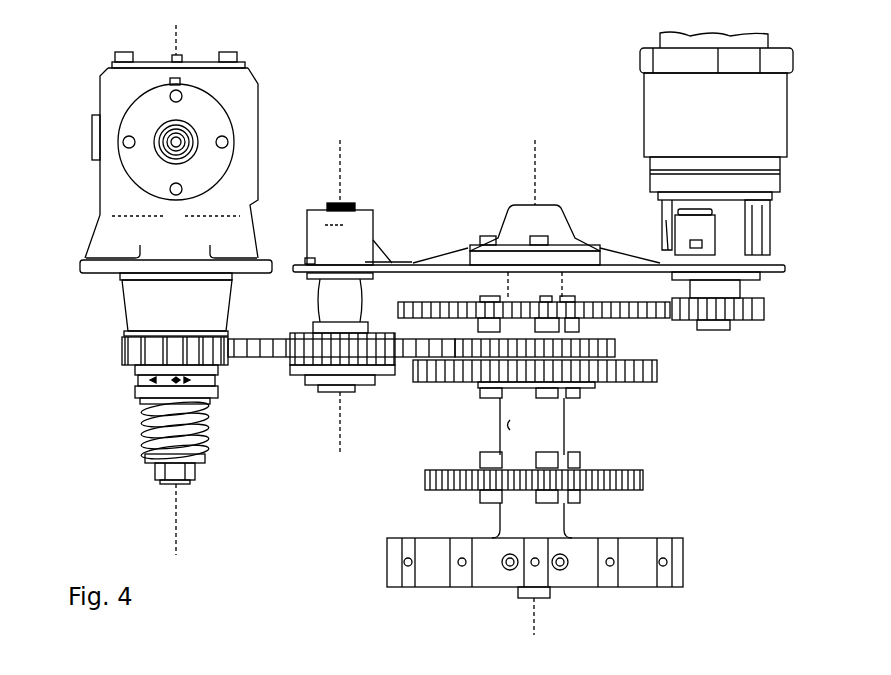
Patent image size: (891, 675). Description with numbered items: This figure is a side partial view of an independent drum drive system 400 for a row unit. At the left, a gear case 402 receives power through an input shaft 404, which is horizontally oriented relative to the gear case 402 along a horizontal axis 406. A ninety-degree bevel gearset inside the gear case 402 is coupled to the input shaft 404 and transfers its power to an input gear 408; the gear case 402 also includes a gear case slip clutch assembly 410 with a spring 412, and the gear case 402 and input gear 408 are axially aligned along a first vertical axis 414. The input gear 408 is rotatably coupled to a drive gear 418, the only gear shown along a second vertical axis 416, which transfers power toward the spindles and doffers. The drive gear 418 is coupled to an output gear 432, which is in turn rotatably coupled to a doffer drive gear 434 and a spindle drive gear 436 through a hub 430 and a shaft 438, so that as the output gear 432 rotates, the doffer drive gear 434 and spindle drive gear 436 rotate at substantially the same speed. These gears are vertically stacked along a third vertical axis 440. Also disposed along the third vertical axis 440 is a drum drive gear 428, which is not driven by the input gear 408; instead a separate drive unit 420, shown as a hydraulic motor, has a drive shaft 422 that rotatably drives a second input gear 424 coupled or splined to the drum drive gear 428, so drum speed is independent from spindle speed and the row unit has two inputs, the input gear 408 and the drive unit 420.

The drive assembly 400 is at (809, 93).
The gear case 402 is at (113, 182).
The input shaft 404 is at (195, 140).
The horizontal axis 406 is at (165, 138).
The input gear 408 is at (122, 345).
The gear case slip clutch assembly 410 is at (98, 462).
The spring 412 is at (148, 430).
The first vertical axis 414 is at (178, 532).
The second vertical axis 416 is at (340, 444).
The drive gear 418 is at (255, 357).
The drive unit 420 is at (652, 92).
The drive shaft 422 is at (745, 270).
The second input gear 424 is at (770, 308).
The drum drive gear 428 is at (632, 300).
The hub 430 is at (592, 352).
The output gear 432 is at (608, 345).
The doffer drive gear 434 is at (660, 372).
The spindle drive gear 436 is at (645, 482).
The shaft 438 is at (565, 412).
The third vertical axis 440 is at (530, 618).